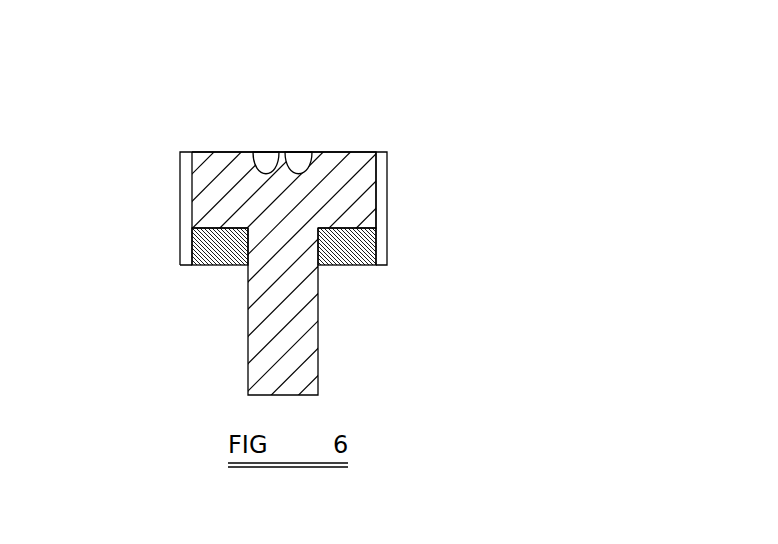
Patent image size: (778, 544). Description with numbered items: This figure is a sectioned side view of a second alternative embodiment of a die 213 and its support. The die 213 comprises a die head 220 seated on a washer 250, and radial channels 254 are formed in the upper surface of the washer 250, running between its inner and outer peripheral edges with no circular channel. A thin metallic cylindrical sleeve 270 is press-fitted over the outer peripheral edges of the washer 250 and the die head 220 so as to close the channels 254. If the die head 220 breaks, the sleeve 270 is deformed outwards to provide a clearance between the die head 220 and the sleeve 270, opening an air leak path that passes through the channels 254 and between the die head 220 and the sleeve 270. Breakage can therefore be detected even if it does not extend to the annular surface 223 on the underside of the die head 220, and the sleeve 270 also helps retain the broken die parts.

The die 213 is at (348, 128).
The die head 220 is at (212, 168).
The annular surface 223 is at (378, 197).
The washer 250 is at (350, 258).
The radial channels 254 is at (203, 230).
The cylindrical sleeve 270 is at (382, 167).